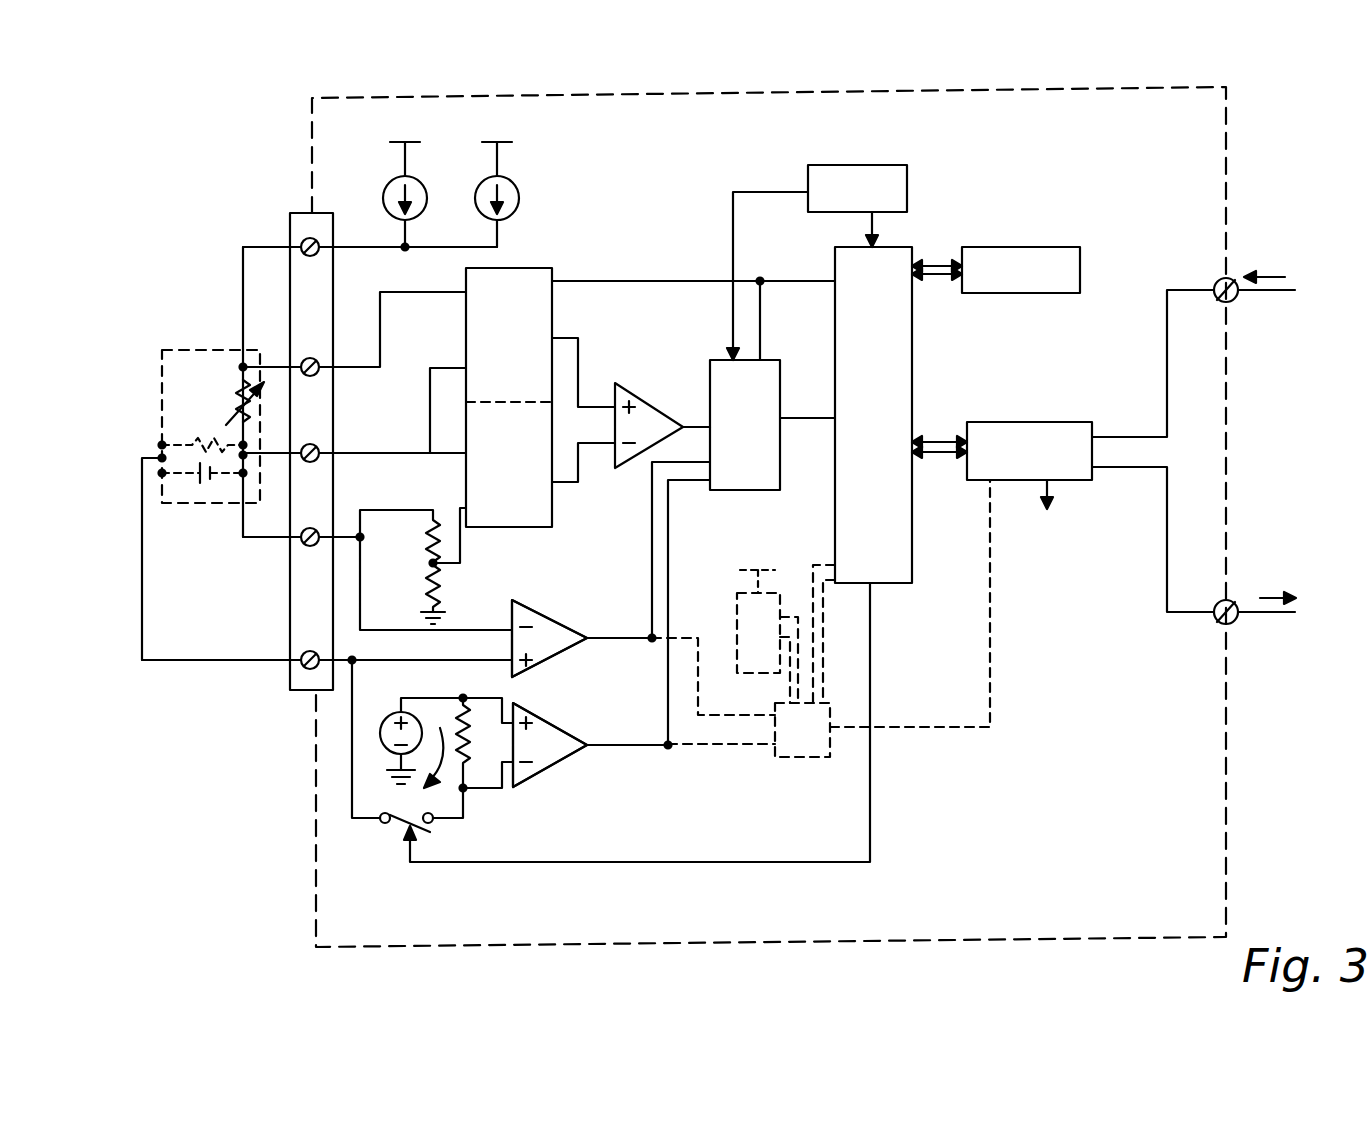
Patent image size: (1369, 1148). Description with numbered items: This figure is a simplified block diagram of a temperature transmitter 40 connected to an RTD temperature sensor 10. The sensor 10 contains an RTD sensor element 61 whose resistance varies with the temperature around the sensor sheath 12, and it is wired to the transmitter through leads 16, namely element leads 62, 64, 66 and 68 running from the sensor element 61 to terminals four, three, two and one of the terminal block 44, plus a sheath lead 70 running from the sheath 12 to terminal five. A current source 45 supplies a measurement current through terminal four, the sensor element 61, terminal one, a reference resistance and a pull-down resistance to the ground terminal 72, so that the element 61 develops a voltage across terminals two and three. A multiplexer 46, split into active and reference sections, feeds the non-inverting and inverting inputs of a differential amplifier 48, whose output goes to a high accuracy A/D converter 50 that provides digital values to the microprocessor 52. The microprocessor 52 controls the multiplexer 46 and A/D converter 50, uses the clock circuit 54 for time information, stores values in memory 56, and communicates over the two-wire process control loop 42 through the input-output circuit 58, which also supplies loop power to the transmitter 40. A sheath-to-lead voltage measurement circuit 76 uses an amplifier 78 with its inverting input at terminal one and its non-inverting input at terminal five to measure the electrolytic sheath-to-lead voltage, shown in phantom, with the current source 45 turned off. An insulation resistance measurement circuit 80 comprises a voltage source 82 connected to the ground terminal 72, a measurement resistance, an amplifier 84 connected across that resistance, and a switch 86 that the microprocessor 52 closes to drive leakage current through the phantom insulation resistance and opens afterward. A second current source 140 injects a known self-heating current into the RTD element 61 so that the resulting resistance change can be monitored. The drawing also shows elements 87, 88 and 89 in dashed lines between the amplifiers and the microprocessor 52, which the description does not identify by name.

The RTD temperature sensor 10 is at (178, 350).
The sheath 12 is at (212, 348).
The leads 16 is at (222, 245).
The temperature transmitter 40 is at (1230, 165).
The process control loop 42 is at (1260, 296).
The terminal block 44 is at (320, 213).
The current source 45 is at (388, 180).
The multiplexer 46 is at (528, 268).
The differential amplifier 48 is at (628, 394).
The A/D converter 50 is at (770, 360).
The microprocessor 52 is at (900, 247).
The clock circuit 54 is at (872, 165).
The memory 56 is at (1020, 247).
The input-output circuit 58 is at (990, 422).
The RTD sensor element 61 is at (262, 412).
The element lead 62 is at (265, 247).
The element lead 64 is at (278, 362).
The element lead 66 is at (276, 460).
The element lead 68 is at (258, 537).
The sheath lead 70 is at (240, 660).
The ground terminal 72 is at (442, 612).
The sheath-to-lead voltage measurement circuit 76 is at (576, 662).
The amplifier 78 is at (555, 622).
The insulation resistance measurement circuit 80 is at (576, 774).
The voltage source 82 is at (390, 714).
The amplifier 84 is at (556, 730).
The switch 86 is at (385, 824).
The control circuit 87 is at (790, 757).
The control line 88 is at (912, 727).
The pull-up element 89 is at (737, 616).
The current source 140 is at (484, 180).